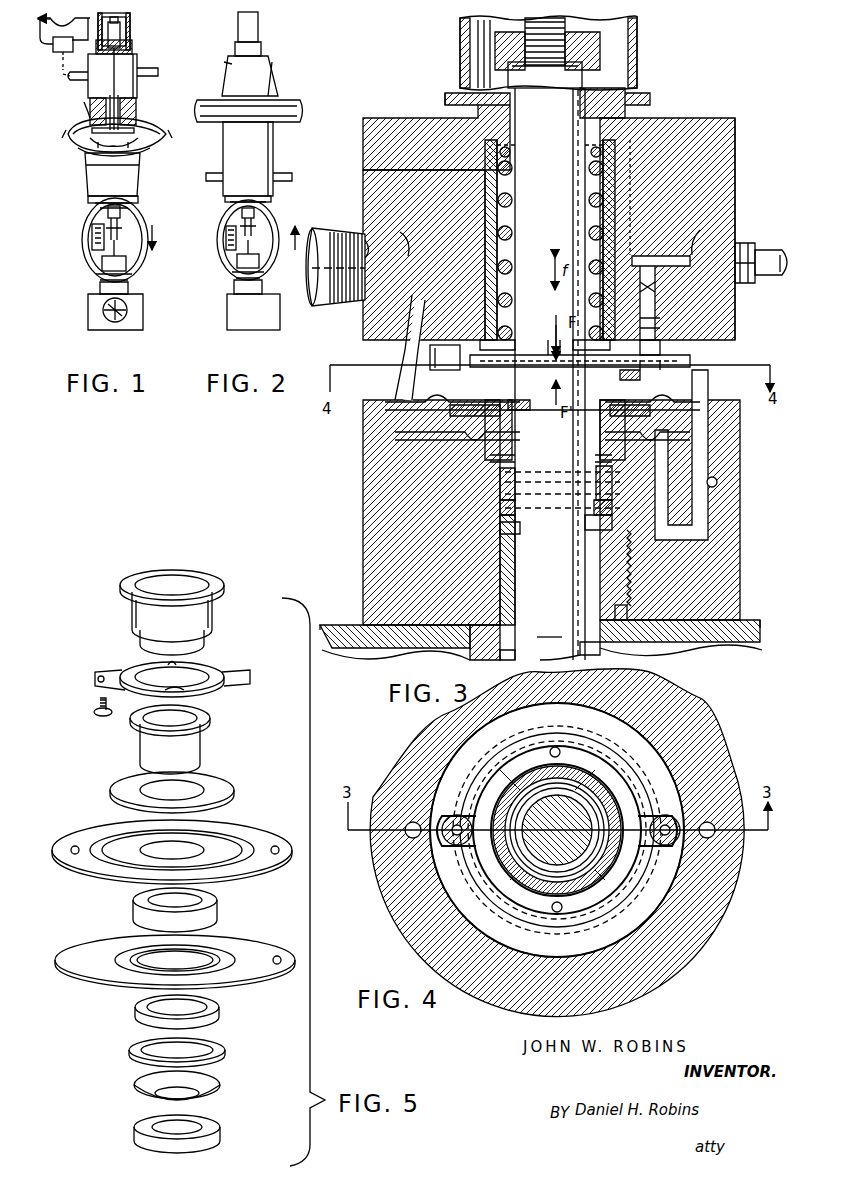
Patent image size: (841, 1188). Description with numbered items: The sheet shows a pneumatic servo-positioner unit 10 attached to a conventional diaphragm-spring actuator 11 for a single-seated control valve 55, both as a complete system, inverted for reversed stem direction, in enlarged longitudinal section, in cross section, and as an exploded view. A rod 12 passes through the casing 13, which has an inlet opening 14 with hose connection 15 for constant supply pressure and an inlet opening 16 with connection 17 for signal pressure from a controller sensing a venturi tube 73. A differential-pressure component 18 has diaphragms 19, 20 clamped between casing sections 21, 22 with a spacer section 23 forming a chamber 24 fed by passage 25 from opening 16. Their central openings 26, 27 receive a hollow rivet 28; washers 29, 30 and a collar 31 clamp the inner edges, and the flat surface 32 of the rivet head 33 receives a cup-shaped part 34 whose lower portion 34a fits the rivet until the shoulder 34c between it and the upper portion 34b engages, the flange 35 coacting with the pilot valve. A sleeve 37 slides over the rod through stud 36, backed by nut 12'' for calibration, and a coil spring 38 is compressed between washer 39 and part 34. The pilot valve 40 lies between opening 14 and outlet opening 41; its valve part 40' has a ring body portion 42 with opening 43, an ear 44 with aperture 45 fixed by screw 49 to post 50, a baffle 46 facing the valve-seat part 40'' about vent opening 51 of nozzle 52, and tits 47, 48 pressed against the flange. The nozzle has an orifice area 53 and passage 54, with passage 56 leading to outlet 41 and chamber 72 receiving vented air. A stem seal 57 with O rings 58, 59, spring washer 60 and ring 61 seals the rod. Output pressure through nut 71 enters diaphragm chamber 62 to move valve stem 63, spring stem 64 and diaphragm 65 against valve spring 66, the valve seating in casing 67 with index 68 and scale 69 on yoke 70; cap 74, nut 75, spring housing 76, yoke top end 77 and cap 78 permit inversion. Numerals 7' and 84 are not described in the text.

In FIG. 1, the servo-positioner unit 10 is at (140, 88).
In FIG. 2, the servo-positioner unit 10 is at (280, 146).
In FIG. 3, the servo-positioner unit 10 is at (368, 330).
In FIG. 1, the diaphragm-spring actuator 11 is at (86, 186).
In FIG. 2, the diaphragm-spring actuator 11 is at (278, 78).
In FIG. 3, the diaphragm-spring actuator 11 is at (748, 622).
In FIG. 1, the element or rod 12 is at (129, 73).
In FIG. 3, the element or rod 12 is at (569, 339).
In FIG. 4, the element or rod 12 is at (557, 863).
In FIG. 3, the nut 12'' is at (514, 51).
In FIG. 3, the casing 13 is at (737, 206).
In FIG. 3, the inlet opening 14 is at (712, 228).
In FIG. 1, the hose connection 15 is at (150, 70).
In FIG. 2, the hose connection 15 is at (288, 181).
In FIG. 3, the hose connection 15 is at (766, 278).
In FIG. 3, the inlet opening 16 is at (410, 250).
In FIG. 1, the connection 17 is at (76, 80).
In FIG. 2, the connection 17 is at (212, 181).
In FIG. 3, the connection 17 is at (338, 236).
In FIG. 3, the differential-pressure component 18 is at (500, 466).
In FIG. 3, the diaphragm 19 is at (445, 412).
In FIG. 5, the diaphragm 19 is at (248, 830).
In FIG. 3, the diaphragm 20 is at (542, 435).
In FIG. 5, the diaphragm 20 is at (255, 946).
In FIG. 3, the casing section 21 is at (738, 316).
In FIG. 4, the casing section 21 is at (712, 716).
In FIG. 3, the casing section 22 is at (735, 560).
In FIG. 3, the spacer section 23 is at (715, 445).
In FIG. 3, the chamber 24 is at (440, 462).
In FIG. 3, the passage 25 is at (400, 352).
In FIG. 4, the passage 25 is at (400, 792).
In FIG. 5, the opening 26 is at (160, 846).
In FIG. 5, the opening 27 is at (150, 958).
In FIG. 3, the hollow rivet 28 is at (514, 436).
In FIG. 5, the hollow rivet 28 is at (200, 752).
In FIG. 3, the protective washer 29 is at (480, 405).
In FIG. 5, the protective washer 29 is at (114, 786).
In FIG. 3, the protective washer 30 is at (615, 484).
In FIG. 5, the protective washer 30 is at (218, 1006).
In FIG. 3, the collar 31 is at (625, 416).
In FIG. 5, the collar 31 is at (217, 898).
In FIG. 5, the flat surface 32 is at (210, 718).
In FIG. 5, the rivet head 33 is at (140, 728).
In FIG. 3, the cup-shaped part 34 is at (608, 340).
In FIG. 5, the cup-shaped part 34 is at (196, 570).
In FIG. 5, the lower portion 34a is at (204, 638).
In FIG. 5, the upper portion 34b is at (134, 610).
In FIG. 3, the shoulder 34c is at (522, 410).
In FIG. 5, the flange 35 is at (222, 588).
In FIG. 3, the stud 36 is at (478, 108).
In FIG. 1, the sleeve 37 is at (132, 46).
In FIG. 3, the sleeve 37 is at (680, 100).
In FIG. 3, the coil spring 38 is at (496, 200).
In FIG. 4, the coil spring 38 is at (600, 872).
In FIG. 3, the washer 39 is at (505, 140).
In FIG. 3, the pilot valve 40 is at (633, 387).
In FIG. 3, the valve part 40' is at (580, 375).
In FIG. 4, the valve part 40' is at (557, 830).
In FIG. 5, the valve part 40' is at (201, 667).
In FIG. 3, the valve-seat part 40'' is at (684, 366).
In FIG. 3, the outlet opening 41 is at (632, 578).
In FIG. 4, the body portion 42 is at (598, 760).
In FIG. 5, the body portion 42 is at (220, 688).
In FIG. 4, the opening 43 is at (612, 778).
In FIG. 5, the opening 43 is at (140, 672).
In FIG. 4, the ear 44 is at (450, 818).
In FIG. 5, the ear 44 is at (95, 674).
In FIG. 5, the aperture 45 is at (97, 682).
In FIG. 3, the baffle 46 is at (648, 372).
In FIG. 4, the baffle 46 is at (665, 846).
In FIG. 5, the baffle 46 is at (250, 676).
In FIG. 4, the tit 47 is at (550, 748).
In FIG. 5, the tit 47 is at (176, 662).
In FIG. 3, the tit 48 is at (548, 352).
In FIG. 4, the tit 48 is at (562, 912).
In FIG. 5, the tit 48 is at (184, 690).
In FIG. 4, the screw 49 is at (456, 842).
In FIG. 5, the screw 49 is at (96, 716).
In FIG. 3, the post 50 is at (448, 345).
In FIG. 4, the post 50 is at (415, 840).
In FIG. 4, the vent opening 51 is at (660, 800).
In FIG. 3, the nozzle 52 is at (660, 215).
In FIG. 3, the orifice area 53 is at (660, 288).
In FIG. 3, the passage 54 is at (668, 324).
In FIG. 1, the control valve 55 is at (108, 322).
In FIG. 3, the passage 56 is at (722, 478).
In FIG. 4, the passage 56 is at (708, 840).
In FIG. 3, the stem seal 57 is at (580, 532).
In FIG. 5, the stem seal 57 is at (218, 1124).
In FIG. 3, the O ring 58 is at (520, 500).
In FIG. 3, the O ring 59 is at (500, 508).
In FIG. 3, the spring washer 60 is at (614, 525).
In FIG. 5, the spring washer 60 is at (214, 1082).
In FIG. 3, the ring 61 is at (498, 492).
In FIG. 5, the ring 61 is at (130, 1050).
In FIG. 1, the diaphragm chamber 62 is at (160, 128).
In FIG. 3, the diaphragm chamber 62 is at (700, 650).
In FIG. 1, the valve stem 63 is at (108, 250).
In FIG. 2, the valve stem 63 is at (240, 248).
In FIG. 1, the spring stem 64 is at (160, 144).
In FIG. 1, the diaphragm 65 is at (92, 128).
In FIG. 1, the valve spring 66 is at (80, 148).
In FIG. 1, the valve casing 67 is at (140, 310).
In FIG. 2, the valve casing 67 is at (270, 318).
In FIG. 1, the index 68 is at (108, 230).
In FIG. 1, the scale 69 is at (92, 238).
In FIG. 2, the scale 69 is at (226, 238).
In FIG. 1, the yoke 70 is at (140, 215).
In FIG. 2, the yoke 70 is at (280, 222).
In FIG. 3, the nut 71 is at (470, 652).
In FIG. 3, the chamber 72 is at (680, 400).
In FIG. 1, the venturi tube 73 is at (38, 36).
In FIG. 1, the cap 74 is at (128, 20).
In FIG. 3, the cap 74 is at (637, 58).
In FIG. 1, the nut 75 is at (98, 206).
In FIG. 2, the nut 75 is at (240, 212).
In FIG. 1, the valve-spring housing 76 is at (130, 172).
In FIG. 2, the valve-spring housing 76 is at (228, 72).
In FIG. 1, the top end 77 is at (88, 198).
In FIG. 2, the cap 78 is at (258, 30).
In FIG. 1, the port 7' is at (81, 107).
In FIG. 3, the ring 84 is at (614, 472).